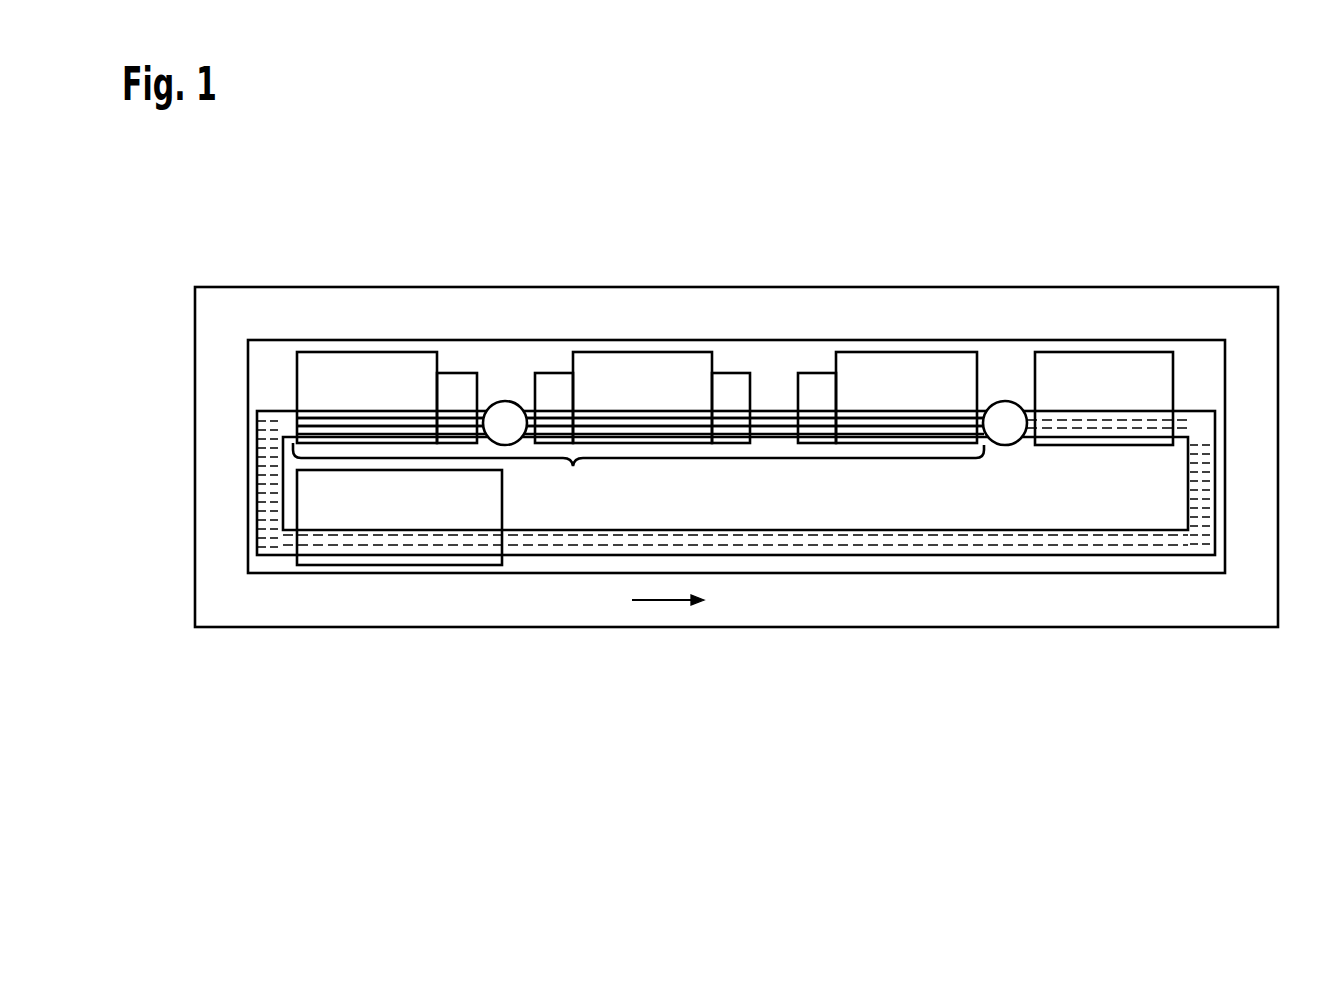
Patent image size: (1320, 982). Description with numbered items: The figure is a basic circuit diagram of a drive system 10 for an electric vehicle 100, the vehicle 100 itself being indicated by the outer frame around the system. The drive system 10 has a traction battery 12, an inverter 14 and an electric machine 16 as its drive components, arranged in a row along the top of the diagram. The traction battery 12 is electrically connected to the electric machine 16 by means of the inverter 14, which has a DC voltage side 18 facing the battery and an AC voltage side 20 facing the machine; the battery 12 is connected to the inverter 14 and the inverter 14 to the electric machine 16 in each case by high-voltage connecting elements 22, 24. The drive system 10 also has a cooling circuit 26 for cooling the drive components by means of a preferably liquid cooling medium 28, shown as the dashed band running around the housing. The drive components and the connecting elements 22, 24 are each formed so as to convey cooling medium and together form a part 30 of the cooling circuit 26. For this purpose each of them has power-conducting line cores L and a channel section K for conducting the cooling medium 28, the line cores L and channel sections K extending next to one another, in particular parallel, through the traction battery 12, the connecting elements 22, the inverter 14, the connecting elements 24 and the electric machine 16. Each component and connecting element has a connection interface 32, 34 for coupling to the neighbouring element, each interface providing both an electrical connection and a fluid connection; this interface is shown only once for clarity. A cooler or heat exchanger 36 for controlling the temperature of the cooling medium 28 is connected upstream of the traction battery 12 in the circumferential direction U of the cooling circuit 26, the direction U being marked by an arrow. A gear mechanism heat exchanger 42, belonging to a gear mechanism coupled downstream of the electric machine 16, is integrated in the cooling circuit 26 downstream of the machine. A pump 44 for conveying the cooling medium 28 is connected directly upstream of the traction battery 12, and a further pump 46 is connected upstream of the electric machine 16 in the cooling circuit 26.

The electric vehicle 100 is at (988, 627).
The drive system 10 is at (1205, 340).
The traction battery 12 is at (944, 378).
The inverter 14 is at (682, 377).
The electric machine 16 is at (412, 377).
The DC voltage side 18 is at (730, 363).
The AC voltage side 20 is at (555, 366).
The high-voltage connecting element 22 is at (781, 418).
The high-voltage connecting element 24 is at (616, 422).
The cooling circuit 26 is at (1073, 557).
The cooling medium 28 is at (1165, 543).
The part of the cooling circuit 30 is at (573, 466).
The connection interface 32 is at (848, 384).
The connection interface 34 is at (818, 363).
The heat exchanger 36 is at (1150, 378).
The gear mechanism heat exchanger 42 is at (390, 498).
The pump 44 is at (1002, 402).
The further pump 46 is at (505, 402).
The circumferential direction U is at (655, 602).
The channel section K is at (765, 427).
The line cores L is at (790, 418).